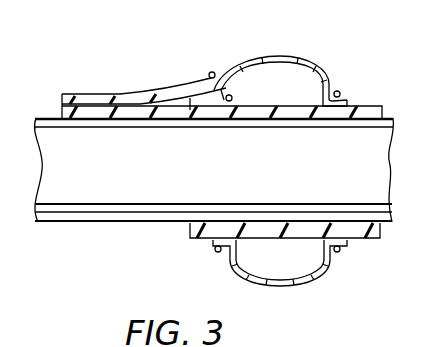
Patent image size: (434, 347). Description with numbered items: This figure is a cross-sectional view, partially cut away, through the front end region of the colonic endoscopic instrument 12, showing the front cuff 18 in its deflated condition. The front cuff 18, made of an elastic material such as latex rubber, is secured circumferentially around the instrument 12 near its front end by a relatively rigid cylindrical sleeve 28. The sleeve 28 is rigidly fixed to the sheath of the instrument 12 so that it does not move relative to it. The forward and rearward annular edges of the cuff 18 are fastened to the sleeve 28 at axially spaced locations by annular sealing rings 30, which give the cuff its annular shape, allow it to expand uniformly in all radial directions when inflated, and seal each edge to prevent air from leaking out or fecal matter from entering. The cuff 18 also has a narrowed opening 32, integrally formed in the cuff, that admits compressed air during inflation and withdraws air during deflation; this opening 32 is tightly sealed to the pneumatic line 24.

The instrument 12 is at (392, 160).
The front cuff 18 is at (298, 60).
The pneumatic line 24 is at (88, 95).
The cylindrical sleeve 28 is at (370, 110).
The annular sealing ring 30 is at (340, 90).
The narrowed opening 32 is at (182, 90).